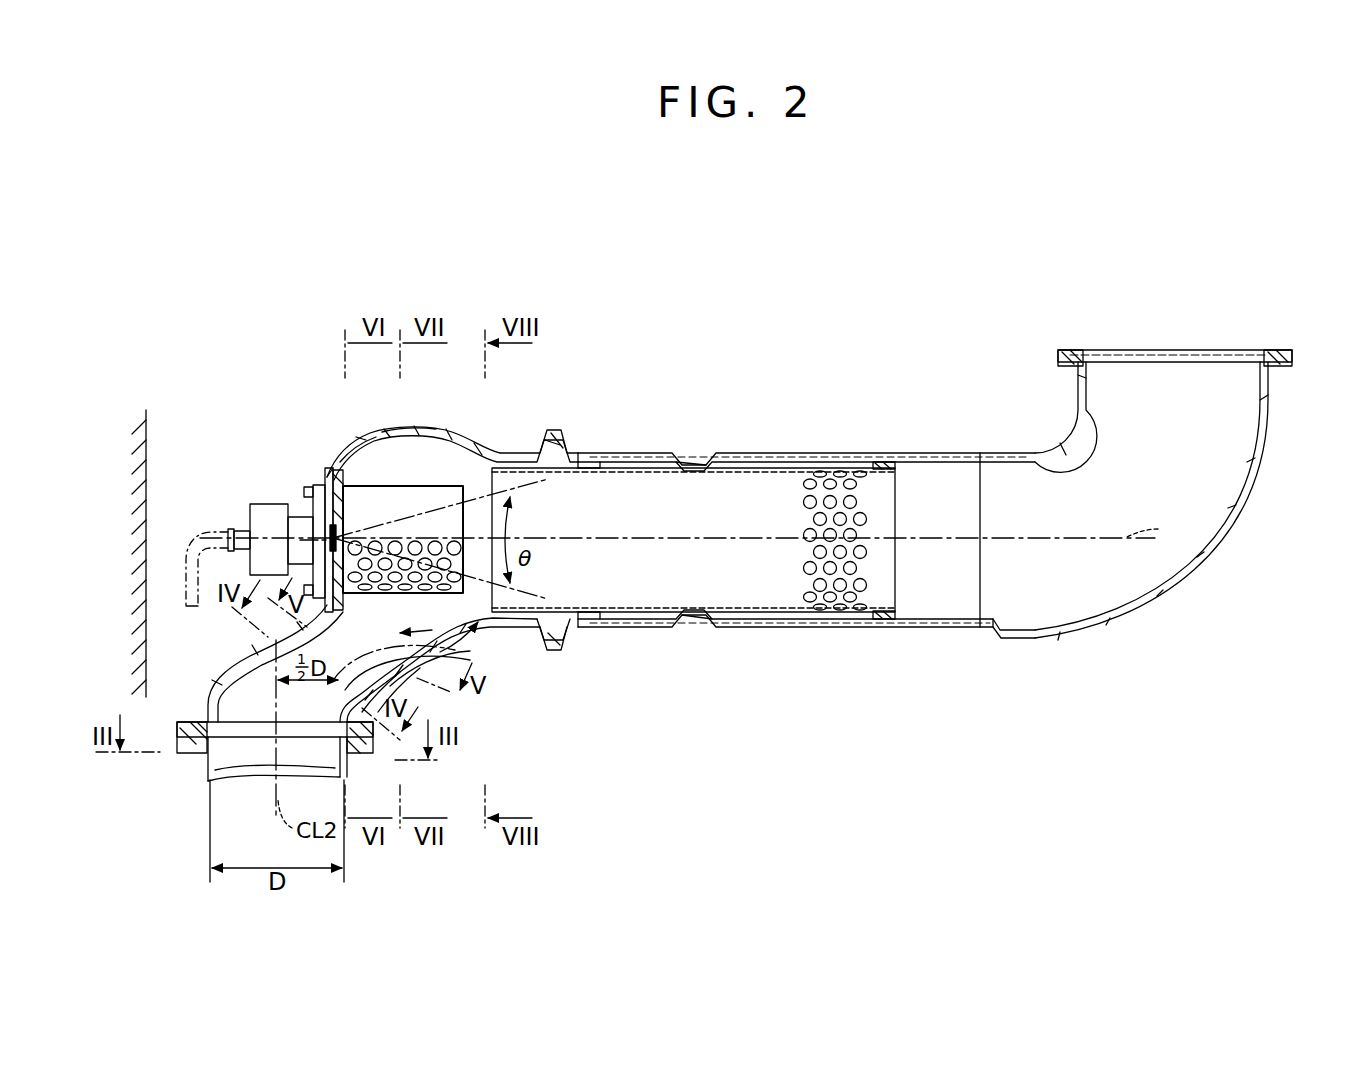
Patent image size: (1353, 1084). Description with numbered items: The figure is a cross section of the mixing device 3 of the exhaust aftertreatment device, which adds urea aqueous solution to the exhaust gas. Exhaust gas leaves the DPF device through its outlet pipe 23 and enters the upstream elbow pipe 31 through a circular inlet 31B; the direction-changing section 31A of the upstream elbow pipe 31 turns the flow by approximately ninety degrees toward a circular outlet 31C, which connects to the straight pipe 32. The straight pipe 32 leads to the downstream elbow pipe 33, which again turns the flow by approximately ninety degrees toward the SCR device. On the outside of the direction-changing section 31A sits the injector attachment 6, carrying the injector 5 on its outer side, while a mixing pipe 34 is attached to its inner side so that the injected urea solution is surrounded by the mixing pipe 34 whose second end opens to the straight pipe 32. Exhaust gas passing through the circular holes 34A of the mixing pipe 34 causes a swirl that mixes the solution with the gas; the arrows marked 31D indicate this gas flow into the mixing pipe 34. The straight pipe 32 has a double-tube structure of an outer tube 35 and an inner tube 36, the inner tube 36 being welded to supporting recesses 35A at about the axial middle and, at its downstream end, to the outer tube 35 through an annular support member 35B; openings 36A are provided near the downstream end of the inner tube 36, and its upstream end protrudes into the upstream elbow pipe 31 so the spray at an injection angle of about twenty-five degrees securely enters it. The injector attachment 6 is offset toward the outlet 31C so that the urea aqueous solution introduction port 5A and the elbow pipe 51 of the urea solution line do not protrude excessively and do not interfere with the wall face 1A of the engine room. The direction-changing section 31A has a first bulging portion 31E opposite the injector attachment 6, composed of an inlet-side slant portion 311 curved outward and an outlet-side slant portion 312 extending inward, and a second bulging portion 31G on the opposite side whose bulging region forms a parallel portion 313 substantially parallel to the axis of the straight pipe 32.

The wall face 1A is at (150, 448).
The mixing device 3 is at (916, 272).
The injector 5 is at (268, 511).
The urea aqueous solution introduction port 5A is at (231, 538).
The elbow pipe 51 is at (190, 545).
The injector attachment 6 is at (323, 478).
The outlet pipe 23 is at (200, 765).
The upstream elbow pipe 31 is at (432, 430).
The direction-changing section 31A is at (462, 643).
The circular inlet 31B is at (279, 736).
The outlet 31C is at (590, 622).
The exhaust gas flow 31D is at (442, 640).
The first bulging portion 31E is at (430, 698).
The second bulging portion 31G is at (380, 432).
The inlet-side slant portion 311 is at (418, 682).
The outlet-side slant portion 312 is at (452, 661).
The parallel portion 313 is at (396, 428).
The straight pipe 32 is at (808, 453).
The downstream elbow pipe 33 is at (1076, 432).
The mixing pipe 34 is at (403, 551).
The circular holes 34A is at (381, 597).
The outer tube 35 is at (766, 455).
The supporting recesses 35A is at (690, 458).
The annular support member 35B is at (885, 462).
The inner tube 36 is at (693, 509).
The openings 36A is at (806, 535).